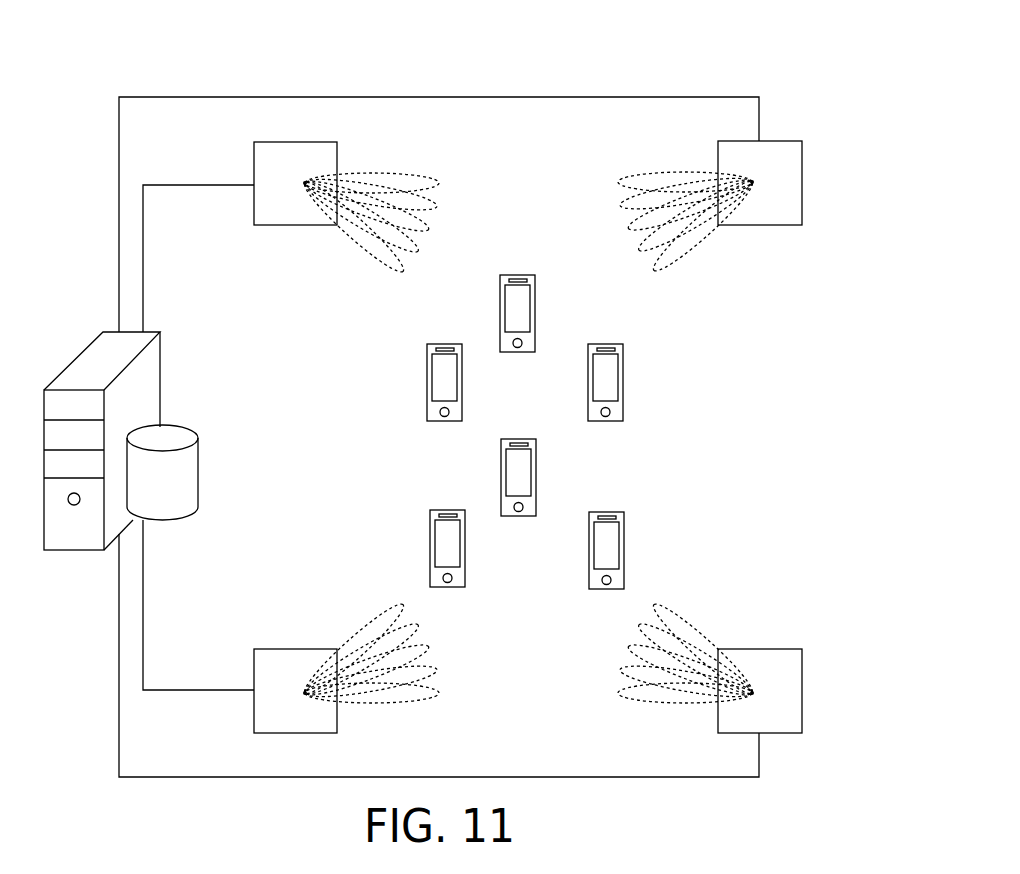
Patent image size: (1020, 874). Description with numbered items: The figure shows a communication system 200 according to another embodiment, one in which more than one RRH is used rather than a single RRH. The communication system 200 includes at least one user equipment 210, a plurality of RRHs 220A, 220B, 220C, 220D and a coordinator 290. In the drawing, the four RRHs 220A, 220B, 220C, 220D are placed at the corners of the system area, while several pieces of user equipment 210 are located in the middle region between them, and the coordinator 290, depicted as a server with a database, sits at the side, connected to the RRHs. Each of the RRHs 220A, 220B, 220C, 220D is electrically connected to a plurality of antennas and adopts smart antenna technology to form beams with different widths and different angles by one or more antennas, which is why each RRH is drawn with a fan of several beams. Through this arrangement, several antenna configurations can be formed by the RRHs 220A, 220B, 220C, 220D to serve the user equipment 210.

The communication system 200 is at (80, 52).
The user equipment 210 is at (623, 377).
The RRH 220A is at (322, 153).
The RRH 220B is at (770, 148).
The RRH 220C is at (770, 660).
The RRH 220D is at (270, 660).
The coordinator 290 is at (148, 382).